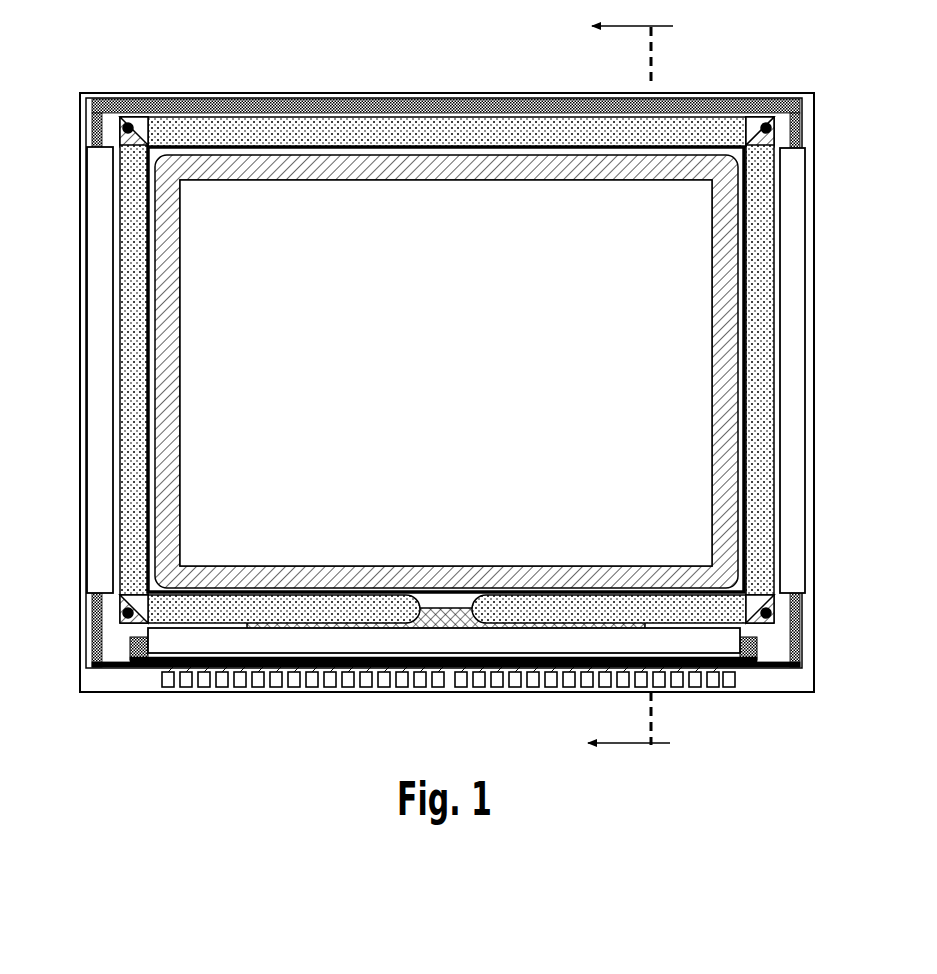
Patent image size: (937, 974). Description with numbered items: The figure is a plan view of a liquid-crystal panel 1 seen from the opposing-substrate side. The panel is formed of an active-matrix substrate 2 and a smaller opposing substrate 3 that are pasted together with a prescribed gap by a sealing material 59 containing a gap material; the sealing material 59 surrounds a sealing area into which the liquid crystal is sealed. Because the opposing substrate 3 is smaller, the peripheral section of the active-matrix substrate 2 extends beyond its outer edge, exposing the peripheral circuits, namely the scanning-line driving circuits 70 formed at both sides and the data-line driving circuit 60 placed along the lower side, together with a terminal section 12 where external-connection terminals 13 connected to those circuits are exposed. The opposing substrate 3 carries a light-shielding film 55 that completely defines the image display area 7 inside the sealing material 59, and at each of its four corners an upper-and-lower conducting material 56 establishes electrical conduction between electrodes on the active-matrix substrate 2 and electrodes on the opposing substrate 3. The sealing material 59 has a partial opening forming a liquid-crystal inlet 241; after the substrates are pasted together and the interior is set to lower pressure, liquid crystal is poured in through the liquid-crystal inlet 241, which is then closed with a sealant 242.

The liquid-crystal panel 1 is at (774, 72).
The active-matrix substrate 2 is at (278, 82).
The opposing substrate 3 is at (416, 112).
The image display area 7 is at (442, 287).
The terminal section 12 is at (319, 702).
The external-connection terminals 13 is at (735, 693).
The light-shielding film 55 is at (196, 251).
The upper-and-lower conducting material 56 is at (126, 124).
The sealing material 59 is at (152, 352).
The data-line driving circuit 60 is at (720, 647).
The scanning-line driving circuits 70 is at (100, 492).
The liquid-crystal inlet 241 is at (446, 597).
The sealant 242 is at (367, 632).